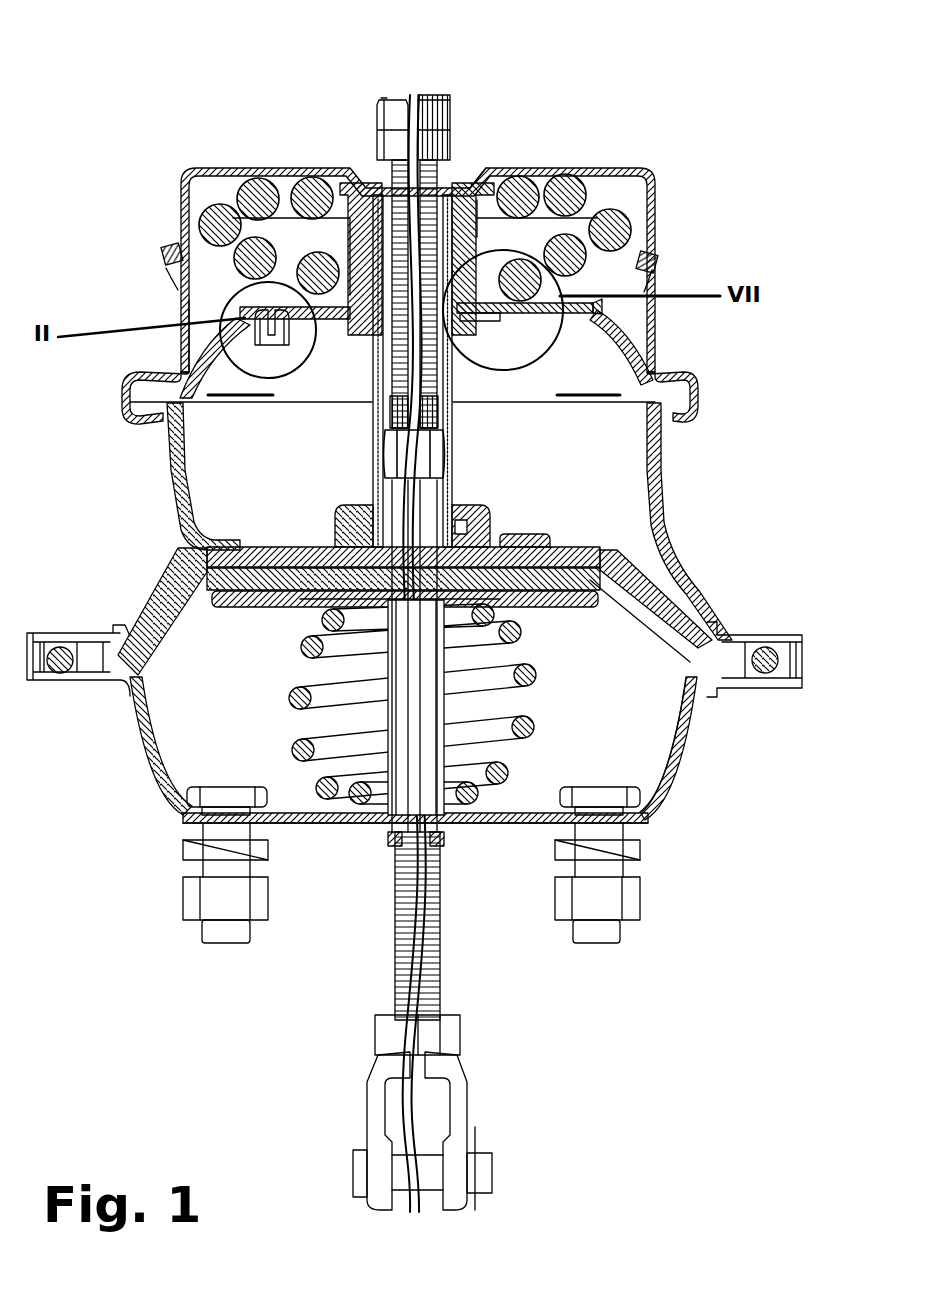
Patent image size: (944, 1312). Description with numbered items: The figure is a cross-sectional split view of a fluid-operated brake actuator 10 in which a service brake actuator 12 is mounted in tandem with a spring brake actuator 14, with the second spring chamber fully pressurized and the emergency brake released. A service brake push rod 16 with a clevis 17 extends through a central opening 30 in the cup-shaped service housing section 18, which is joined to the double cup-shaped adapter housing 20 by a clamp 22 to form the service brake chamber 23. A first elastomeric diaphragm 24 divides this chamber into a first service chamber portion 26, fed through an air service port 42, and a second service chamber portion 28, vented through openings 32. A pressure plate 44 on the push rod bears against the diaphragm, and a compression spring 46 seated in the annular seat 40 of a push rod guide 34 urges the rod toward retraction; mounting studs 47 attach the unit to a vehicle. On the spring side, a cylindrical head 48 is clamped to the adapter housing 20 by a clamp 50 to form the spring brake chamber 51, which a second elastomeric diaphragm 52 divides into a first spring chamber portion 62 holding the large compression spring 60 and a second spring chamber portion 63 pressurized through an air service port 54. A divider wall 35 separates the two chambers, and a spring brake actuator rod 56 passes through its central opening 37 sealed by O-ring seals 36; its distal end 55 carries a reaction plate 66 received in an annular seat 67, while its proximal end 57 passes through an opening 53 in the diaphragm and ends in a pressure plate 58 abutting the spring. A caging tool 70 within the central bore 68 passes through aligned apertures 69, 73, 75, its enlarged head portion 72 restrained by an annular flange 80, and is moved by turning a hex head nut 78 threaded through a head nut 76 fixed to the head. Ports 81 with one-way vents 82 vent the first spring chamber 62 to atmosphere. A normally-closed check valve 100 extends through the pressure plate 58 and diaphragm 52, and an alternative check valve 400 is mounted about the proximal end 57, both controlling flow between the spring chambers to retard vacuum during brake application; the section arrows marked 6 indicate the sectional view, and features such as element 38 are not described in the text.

The fluid-operated brake actuator 10 is at (226, 38).
The service brake actuator 12 is at (658, 834).
The spring brake actuator 14 is at (682, 205).
The service brake push rod 16 is at (442, 989).
The clevis 17 is at (466, 1108).
The cup-shaped service housing section 18 is at (512, 836).
The adapter housing 20 is at (664, 535).
The clamp 22 is at (806, 652).
The service brake chamber 23 is at (612, 728).
The first elastomeric diaphragm 24 is at (650, 609).
The first service chamber portion 26 is at (652, 577).
The second service chamber portion 28 is at (628, 766).
The central opening 30 is at (450, 834).
The opening 32 is at (137, 752).
The push rod guide 34 is at (320, 807).
The divider wall 35 is at (552, 543).
The O-ring seal 36 is at (482, 517).
The central opening 37 is at (460, 503).
The hub shoulder 38 is at (366, 500).
The annular seat 40 is at (378, 832).
The air service port 42 is at (157, 603).
The pressure plate 44 is at (605, 602).
The compression spring 46 is at (535, 738).
The mounting stud 47 is at (204, 920).
The cylindrical head 48 is at (642, 166).
The clamp 50 is at (118, 392).
The spring brake chamber 51 is at (230, 482).
The second elastomeric diaphragm 52 is at (571, 318).
The opening 53 is at (461, 314).
The air service port 54 is at (180, 487).
The distal end 55 is at (307, 596).
The spring brake actuator rod 56 is at (365, 360).
The proximal end 57 is at (386, 192).
The pressure plate 58 is at (603, 312).
The compression spring 60 is at (617, 230).
The first spring chamber portion 62 is at (617, 190).
The second spring chamber portion 63 is at (562, 456).
The reaction plate 66 is at (338, 546).
The annular seat 67 is at (502, 605).
The central bore 68 is at (370, 340).
The aperture 69 is at (470, 162).
The caging tool 70 is at (374, 433).
The enlarged head portion 72 is at (432, 443).
The aperture 73 is at (366, 150).
The aperture 75 is at (384, 100).
The head nut 76 is at (480, 128).
The hex head nut 78 is at (456, 106).
The annular flange 80 is at (486, 178).
The port 81 is at (172, 272).
The one-way vent 82 is at (170, 248).
The check valve 100 is at (252, 298).
The check valve 400 is at (503, 365).
The section line 6 is at (220, 398).